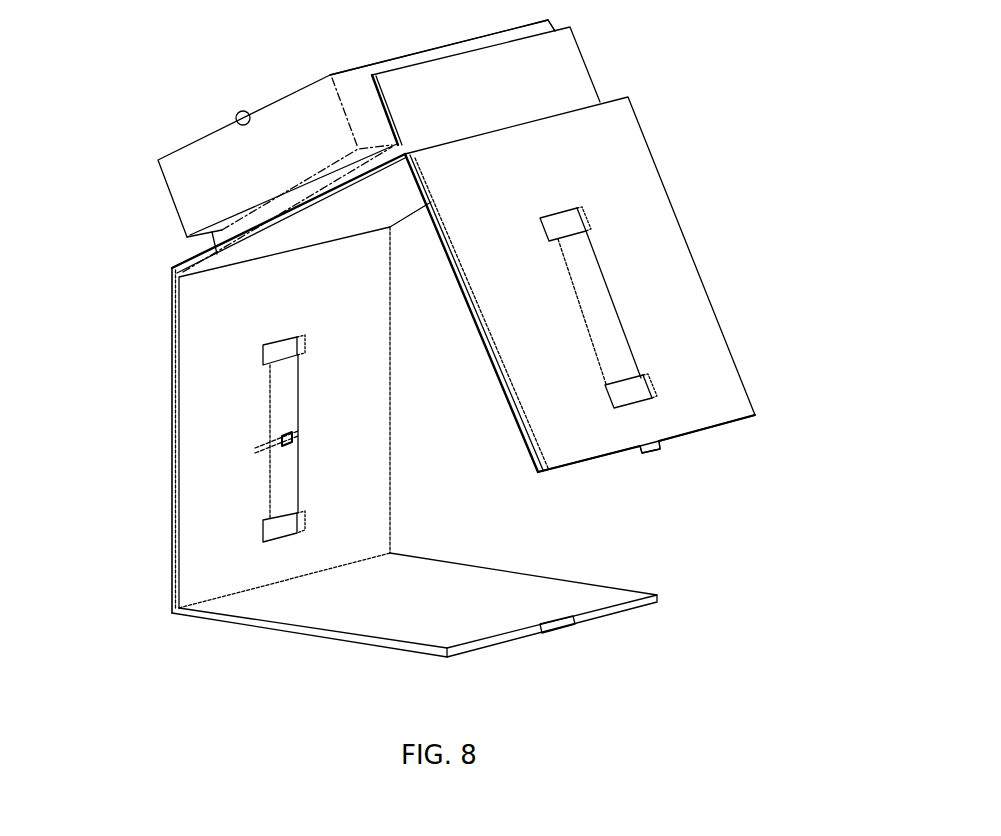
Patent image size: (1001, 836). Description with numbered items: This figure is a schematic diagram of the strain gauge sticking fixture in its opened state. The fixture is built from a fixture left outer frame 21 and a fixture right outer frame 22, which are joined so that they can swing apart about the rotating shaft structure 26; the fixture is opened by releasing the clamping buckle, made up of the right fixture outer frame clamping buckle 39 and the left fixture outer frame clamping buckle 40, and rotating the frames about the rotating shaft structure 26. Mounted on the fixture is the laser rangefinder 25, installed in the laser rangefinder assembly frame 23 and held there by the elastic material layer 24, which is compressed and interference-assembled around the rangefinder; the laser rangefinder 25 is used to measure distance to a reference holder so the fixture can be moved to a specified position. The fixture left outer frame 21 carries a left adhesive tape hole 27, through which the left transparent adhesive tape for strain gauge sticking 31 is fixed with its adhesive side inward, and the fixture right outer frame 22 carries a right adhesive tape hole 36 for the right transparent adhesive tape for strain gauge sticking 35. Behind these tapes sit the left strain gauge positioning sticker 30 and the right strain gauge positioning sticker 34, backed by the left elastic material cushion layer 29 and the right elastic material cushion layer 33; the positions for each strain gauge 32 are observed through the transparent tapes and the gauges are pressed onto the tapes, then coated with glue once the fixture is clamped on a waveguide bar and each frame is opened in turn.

The fixture left outer frame 21 is at (172, 359).
The fixture right outer frame 22 is at (637, 284).
The laser rangefinder assembly frame 23 is at (565, 45).
The elastic material layer 24 is at (390, 108).
The laser rangefinder 25 is at (178, 160).
The rotating shaft structure 26 is at (172, 273).
The left adhesive tape hole 27 is at (285, 527).
The left elastic material cushion layer 29 is at (172, 387).
The left strain gauge positioning sticker 30 is at (172, 414).
The left transparent adhesive tape for strain gauge sticking 31 is at (285, 496).
The strain gauge 32 is at (283, 439).
The right elastic material cushion layer 33 is at (440, 212).
The right strain gauge positioning sticker 34 is at (443, 253).
The right transparent adhesive tape for strain gauge sticking 35 is at (590, 307).
The right adhesive tape hole 36 is at (628, 393).
The right fixture outer frame clamping buckle 39 is at (663, 448).
The left fixture outer frame clamping buckle 40 is at (575, 627).